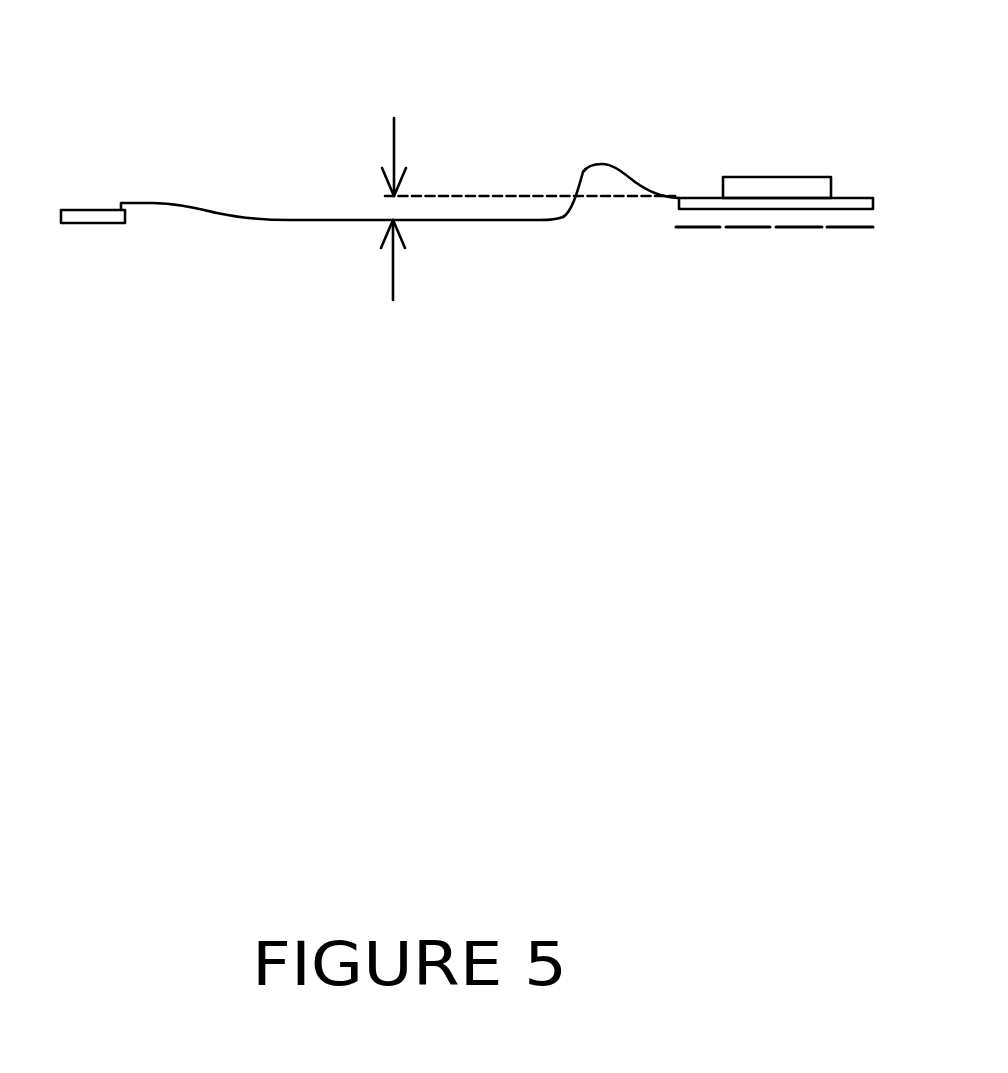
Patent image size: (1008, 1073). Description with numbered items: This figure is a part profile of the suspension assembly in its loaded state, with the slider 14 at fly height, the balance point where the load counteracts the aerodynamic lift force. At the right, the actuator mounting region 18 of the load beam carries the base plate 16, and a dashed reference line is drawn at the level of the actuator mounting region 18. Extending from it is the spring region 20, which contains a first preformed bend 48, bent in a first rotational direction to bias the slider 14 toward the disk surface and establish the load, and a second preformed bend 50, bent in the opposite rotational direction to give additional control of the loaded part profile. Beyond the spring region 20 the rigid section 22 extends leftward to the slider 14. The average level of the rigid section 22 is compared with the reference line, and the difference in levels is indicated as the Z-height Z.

The slider 14 is at (87, 215).
The base plate 16 is at (772, 185).
The actuator mounting region 18 is at (858, 203).
The spring region 20 is at (582, 173).
The rigid section 22 is at (285, 192).
The first preformed bend 48 is at (610, 165).
The second preformed bend 50 is at (563, 217).
The Z-height Z is at (395, 235).